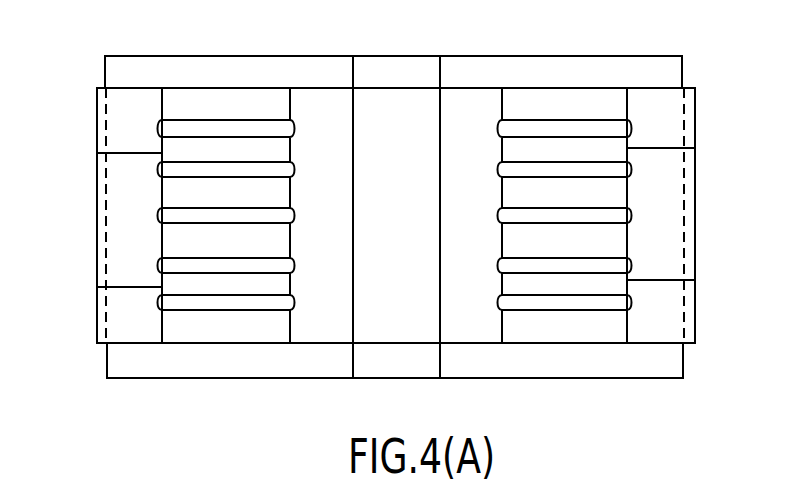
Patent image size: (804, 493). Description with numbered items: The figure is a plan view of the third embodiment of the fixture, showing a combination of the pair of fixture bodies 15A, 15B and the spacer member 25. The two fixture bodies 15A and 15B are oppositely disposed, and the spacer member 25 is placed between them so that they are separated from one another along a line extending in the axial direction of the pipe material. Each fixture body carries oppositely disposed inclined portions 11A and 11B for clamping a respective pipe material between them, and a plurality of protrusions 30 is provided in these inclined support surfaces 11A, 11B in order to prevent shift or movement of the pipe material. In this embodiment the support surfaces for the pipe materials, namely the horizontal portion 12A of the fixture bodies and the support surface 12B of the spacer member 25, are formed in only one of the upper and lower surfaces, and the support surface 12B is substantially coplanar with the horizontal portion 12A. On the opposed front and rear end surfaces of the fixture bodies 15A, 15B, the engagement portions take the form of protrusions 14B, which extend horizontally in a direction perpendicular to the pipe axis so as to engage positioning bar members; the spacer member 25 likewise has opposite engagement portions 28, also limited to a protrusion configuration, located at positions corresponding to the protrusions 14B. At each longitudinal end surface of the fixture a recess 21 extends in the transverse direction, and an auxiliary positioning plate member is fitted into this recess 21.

The inclined portion 11A is at (255, 248).
The inclined portion 11B is at (573, 248).
The horizontal portion of support surface 12A is at (320, 322).
The support surface of spacer body 12B is at (426, 322).
The protrusion 14B is at (138, 367).
The fixture body 15A is at (117, 253).
The fixture body 15B is at (672, 233).
The recess 21 is at (97, 128).
The spacer member 25 is at (390, 317).
The engagement portion 28 is at (370, 357).
The protrusion 30 is at (222, 125).